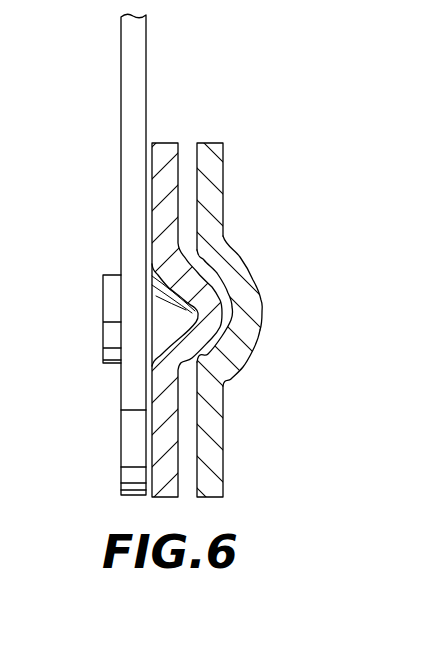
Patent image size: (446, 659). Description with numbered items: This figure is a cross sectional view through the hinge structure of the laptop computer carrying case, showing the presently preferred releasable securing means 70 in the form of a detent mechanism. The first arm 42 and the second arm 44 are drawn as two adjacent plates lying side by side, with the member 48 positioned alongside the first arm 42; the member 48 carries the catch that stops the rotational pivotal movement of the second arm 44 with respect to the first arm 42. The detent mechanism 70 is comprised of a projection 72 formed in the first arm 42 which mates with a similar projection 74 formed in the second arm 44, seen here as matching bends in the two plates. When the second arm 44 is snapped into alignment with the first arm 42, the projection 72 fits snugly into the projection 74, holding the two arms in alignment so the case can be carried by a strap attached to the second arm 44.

The member 48 is at (121, 61).
The first arm 42 is at (163, 143).
The second arm 44 is at (212, 143).
The releasable securing means 70 is at (260, 266).
The projection 72 is at (243, 361).
The projection 74 is at (260, 308).